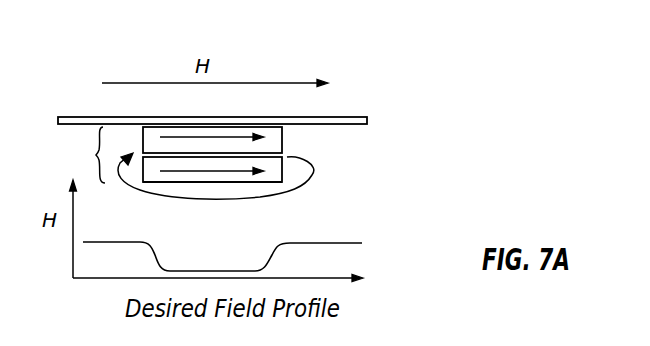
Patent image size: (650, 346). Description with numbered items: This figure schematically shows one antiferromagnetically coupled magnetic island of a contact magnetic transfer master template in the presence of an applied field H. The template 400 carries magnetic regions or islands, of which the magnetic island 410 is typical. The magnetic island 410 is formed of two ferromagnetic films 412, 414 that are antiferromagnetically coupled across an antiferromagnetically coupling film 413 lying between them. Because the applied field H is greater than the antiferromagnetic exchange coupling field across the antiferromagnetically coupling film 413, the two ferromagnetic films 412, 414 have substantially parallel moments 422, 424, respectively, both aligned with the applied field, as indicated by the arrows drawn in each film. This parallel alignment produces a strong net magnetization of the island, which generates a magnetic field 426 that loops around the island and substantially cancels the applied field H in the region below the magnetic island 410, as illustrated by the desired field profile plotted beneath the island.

The template 400 is at (345, 118).
The magnetic island 410 is at (208, 163).
The ferromagnetic film 412 is at (282, 131).
The antiferromagnetically coupling film 413 is at (287, 157).
The ferromagnetic film 414 is at (168, 182).
The magnetic moment 422 is at (190, 137).
The magnetic moment 424 is at (213, 172).
The magnetic field 426 is at (297, 190).